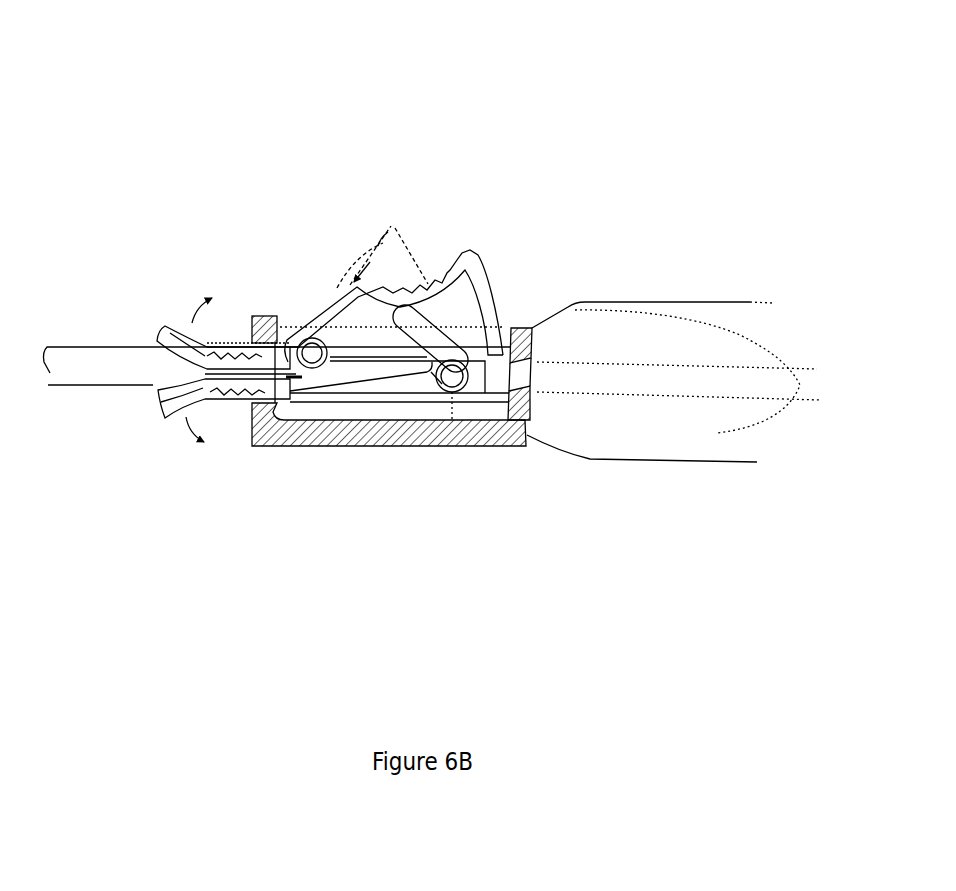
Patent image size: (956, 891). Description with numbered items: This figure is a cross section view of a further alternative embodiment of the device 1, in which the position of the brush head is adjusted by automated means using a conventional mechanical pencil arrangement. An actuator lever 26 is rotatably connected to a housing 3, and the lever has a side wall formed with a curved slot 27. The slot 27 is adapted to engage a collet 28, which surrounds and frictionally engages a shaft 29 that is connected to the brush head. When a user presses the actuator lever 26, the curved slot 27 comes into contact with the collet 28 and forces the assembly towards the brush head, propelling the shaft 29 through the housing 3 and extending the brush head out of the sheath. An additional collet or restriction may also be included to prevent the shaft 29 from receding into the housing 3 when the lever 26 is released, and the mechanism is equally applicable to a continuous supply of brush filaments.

The catheter clamping device 1 is at (340, 118).
The housing 3 is at (582, 430).
The actuator lever 26 is at (467, 248).
The curved slot 27 is at (453, 327).
The collet 28 is at (420, 393).
The shaft 29 is at (80, 363).